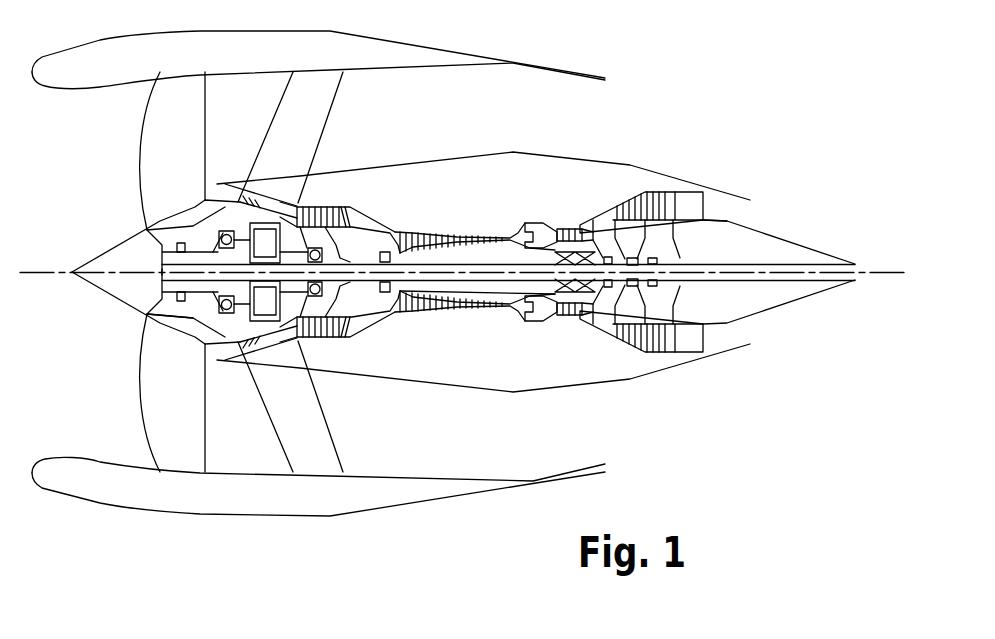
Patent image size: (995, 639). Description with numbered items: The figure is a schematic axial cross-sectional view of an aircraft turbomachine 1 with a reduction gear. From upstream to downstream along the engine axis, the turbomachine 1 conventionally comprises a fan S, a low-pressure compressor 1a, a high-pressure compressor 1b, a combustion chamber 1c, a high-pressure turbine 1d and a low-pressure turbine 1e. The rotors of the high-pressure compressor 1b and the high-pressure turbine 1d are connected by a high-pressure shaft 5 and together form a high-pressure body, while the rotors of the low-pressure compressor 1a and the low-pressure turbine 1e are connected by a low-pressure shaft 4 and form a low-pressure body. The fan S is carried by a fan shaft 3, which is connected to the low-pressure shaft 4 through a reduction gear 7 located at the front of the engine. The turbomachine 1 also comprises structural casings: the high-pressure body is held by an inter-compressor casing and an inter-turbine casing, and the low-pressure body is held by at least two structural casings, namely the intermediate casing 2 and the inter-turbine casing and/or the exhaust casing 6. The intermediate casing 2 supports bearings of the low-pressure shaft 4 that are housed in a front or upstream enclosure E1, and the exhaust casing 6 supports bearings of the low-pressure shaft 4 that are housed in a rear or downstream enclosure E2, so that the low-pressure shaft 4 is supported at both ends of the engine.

The turbomachine 1 is at (719, 136).
The low-pressure compressor 1a is at (328, 194).
The high-pressure compressor 1b is at (463, 214).
The combustion chamber 1c is at (538, 211).
The high-pressure turbine 1d is at (566, 211).
The low-pressure turbine 1e is at (653, 177).
The intermediate casing 2 is at (360, 90).
The fan shaft 3 is at (147, 243).
The low-pressure shaft 4 is at (457, 281).
The high-pressure shaft 5 is at (510, 302).
The exhaust casing 6 is at (715, 207).
The reduction gear 7 is at (265, 233).
The fan S is at (108, 153).
The upstream enclosure E1 is at (193, 348).
The downstream enclosure E2 is at (660, 236).